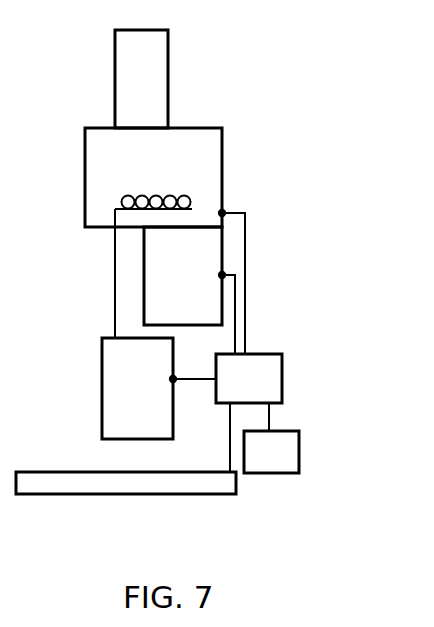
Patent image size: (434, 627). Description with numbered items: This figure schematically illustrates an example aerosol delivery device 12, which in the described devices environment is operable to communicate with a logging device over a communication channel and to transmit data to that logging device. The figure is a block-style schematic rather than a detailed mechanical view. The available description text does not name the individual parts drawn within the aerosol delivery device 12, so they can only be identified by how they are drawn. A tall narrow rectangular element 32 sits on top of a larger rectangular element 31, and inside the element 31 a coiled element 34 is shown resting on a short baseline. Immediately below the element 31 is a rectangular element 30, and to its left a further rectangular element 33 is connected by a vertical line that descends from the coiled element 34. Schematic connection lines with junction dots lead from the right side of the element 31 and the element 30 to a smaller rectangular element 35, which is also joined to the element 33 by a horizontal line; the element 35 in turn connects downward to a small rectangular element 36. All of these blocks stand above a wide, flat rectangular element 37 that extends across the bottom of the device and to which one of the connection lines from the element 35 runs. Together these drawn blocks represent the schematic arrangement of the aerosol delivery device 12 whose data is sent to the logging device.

The aerosol delivery device 12 is at (324, 65).
The control unit 30 is at (202, 258).
The housing 31 is at (222, 165).
The chimney / upper duct 32 is at (170, 85).
The power supply unit 33 is at (102, 393).
The heating coil 34 is at (130, 195).
The controller 35 is at (282, 378).
The sensor 36 is at (299, 450).
The base plate 37 is at (168, 494).